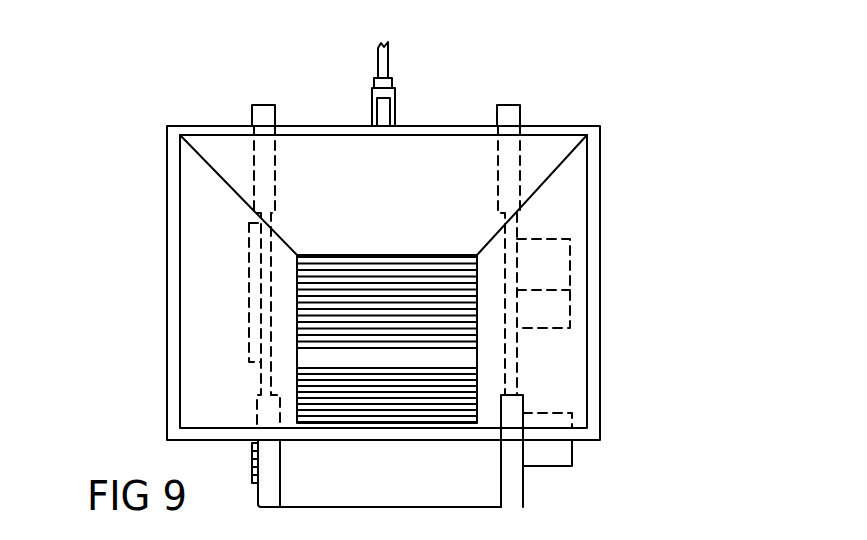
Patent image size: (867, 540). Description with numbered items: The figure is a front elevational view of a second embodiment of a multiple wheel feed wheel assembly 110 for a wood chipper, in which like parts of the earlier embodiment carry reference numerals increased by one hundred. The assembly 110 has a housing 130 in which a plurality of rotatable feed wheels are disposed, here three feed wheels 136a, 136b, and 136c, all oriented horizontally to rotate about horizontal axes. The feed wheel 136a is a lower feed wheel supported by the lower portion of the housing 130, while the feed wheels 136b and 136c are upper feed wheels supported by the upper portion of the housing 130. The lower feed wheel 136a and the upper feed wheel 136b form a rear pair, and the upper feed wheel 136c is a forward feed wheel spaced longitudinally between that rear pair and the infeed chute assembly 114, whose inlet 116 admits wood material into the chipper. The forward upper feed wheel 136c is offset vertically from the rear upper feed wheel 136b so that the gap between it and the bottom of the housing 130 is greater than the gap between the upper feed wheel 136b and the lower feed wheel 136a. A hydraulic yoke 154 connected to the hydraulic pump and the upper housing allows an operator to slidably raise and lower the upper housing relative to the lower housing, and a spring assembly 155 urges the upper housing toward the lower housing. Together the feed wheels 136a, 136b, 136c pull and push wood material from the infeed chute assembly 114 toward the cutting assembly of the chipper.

The multiple wheel feed wheel assembly 110 is at (633, 102).
The infeed chute assembly 114 is at (601, 193).
The inlet 116 is at (407, 175).
The housing 130 is at (507, 506).
The lower feed wheel 136a is at (298, 387).
The rear upper feed wheel 136b is at (298, 329).
The forward upper feed wheel 136c is at (297, 283).
The hydraulic yoke 154 is at (382, 75).
The spring assembly 155 is at (252, 120).